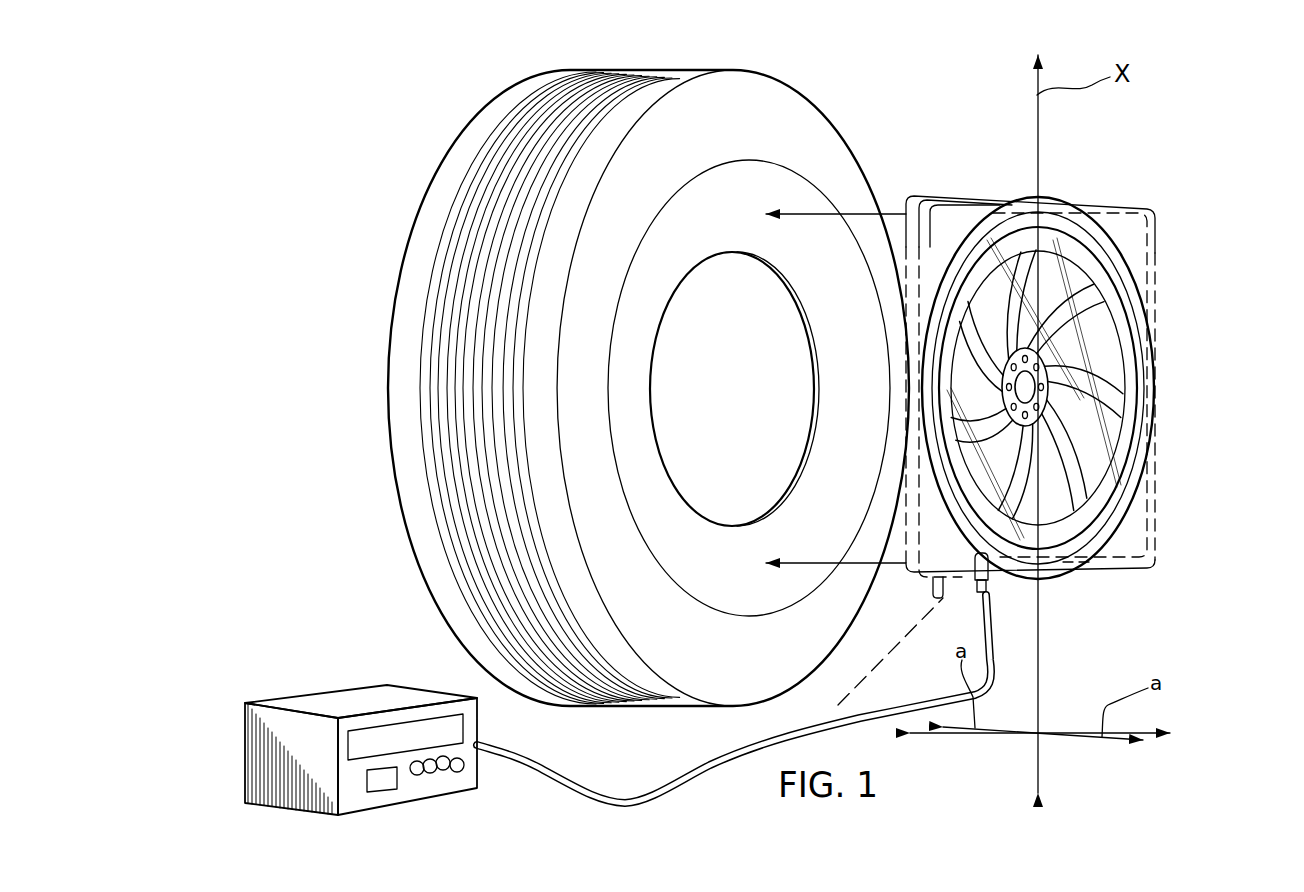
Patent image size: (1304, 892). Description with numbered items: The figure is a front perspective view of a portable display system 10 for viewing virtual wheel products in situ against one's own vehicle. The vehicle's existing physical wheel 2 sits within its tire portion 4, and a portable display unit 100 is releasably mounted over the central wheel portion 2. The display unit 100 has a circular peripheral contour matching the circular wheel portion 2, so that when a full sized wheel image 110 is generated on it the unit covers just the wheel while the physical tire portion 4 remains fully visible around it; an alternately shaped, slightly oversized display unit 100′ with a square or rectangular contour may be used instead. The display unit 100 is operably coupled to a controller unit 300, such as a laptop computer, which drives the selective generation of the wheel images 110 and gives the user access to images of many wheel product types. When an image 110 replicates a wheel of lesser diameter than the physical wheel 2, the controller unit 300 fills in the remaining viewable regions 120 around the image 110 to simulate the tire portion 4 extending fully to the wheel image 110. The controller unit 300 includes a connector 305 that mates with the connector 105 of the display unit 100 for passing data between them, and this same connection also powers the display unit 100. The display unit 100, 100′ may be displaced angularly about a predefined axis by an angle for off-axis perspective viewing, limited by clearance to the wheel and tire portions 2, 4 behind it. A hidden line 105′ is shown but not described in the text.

The wheel 2 is at (687, 353).
The tire portion 4 is at (803, 118).
The portable display system 10 is at (1197, 129).
The portable display unit 100 is at (1065, 311).
The oversized display unit 100′ is at (1133, 232).
The wheel image 110 is at (1105, 425).
The remaining viewable regions 120 is at (1133, 262).
The connector 105 is at (990, 578).
The hidden hose line 105′ is at (867, 662).
The controller unit 300 is at (338, 700).
The connector 305 is at (967, 590).